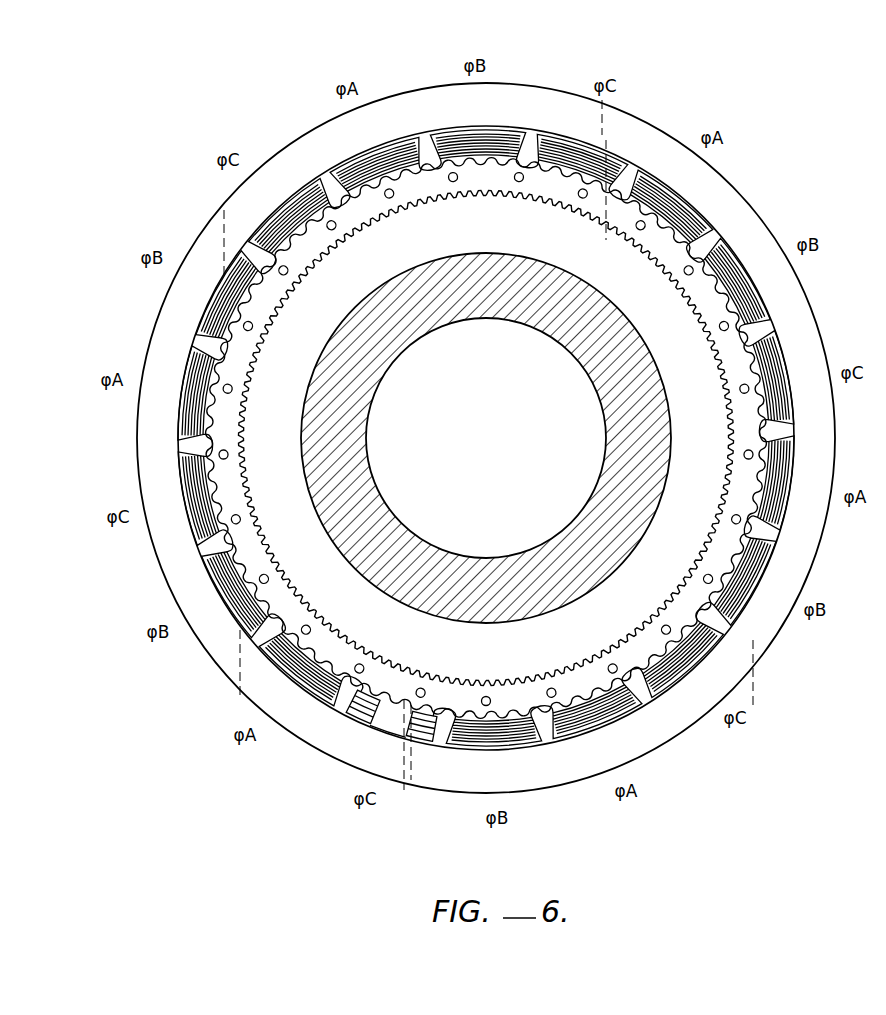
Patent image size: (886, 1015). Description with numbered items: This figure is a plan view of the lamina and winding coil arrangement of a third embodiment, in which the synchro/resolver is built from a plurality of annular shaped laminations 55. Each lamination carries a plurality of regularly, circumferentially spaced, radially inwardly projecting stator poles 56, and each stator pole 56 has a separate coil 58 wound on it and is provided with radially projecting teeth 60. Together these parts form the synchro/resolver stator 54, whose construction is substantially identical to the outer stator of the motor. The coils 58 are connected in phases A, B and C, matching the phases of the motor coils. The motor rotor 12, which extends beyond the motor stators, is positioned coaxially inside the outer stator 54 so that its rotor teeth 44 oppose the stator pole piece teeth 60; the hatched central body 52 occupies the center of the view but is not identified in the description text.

The motor rotor 12 is at (467, 180).
The rotor teeth 44 is at (275, 621).
The rotor hub 52 is at (590, 363).
The synchro/resolver stator 54 is at (549, 80).
The annular shaped laminations 55 is at (499, 98).
The stator poles 56 is at (394, 732).
The coil 58 is at (352, 728).
The radially projecting teeth 60 is at (442, 720).